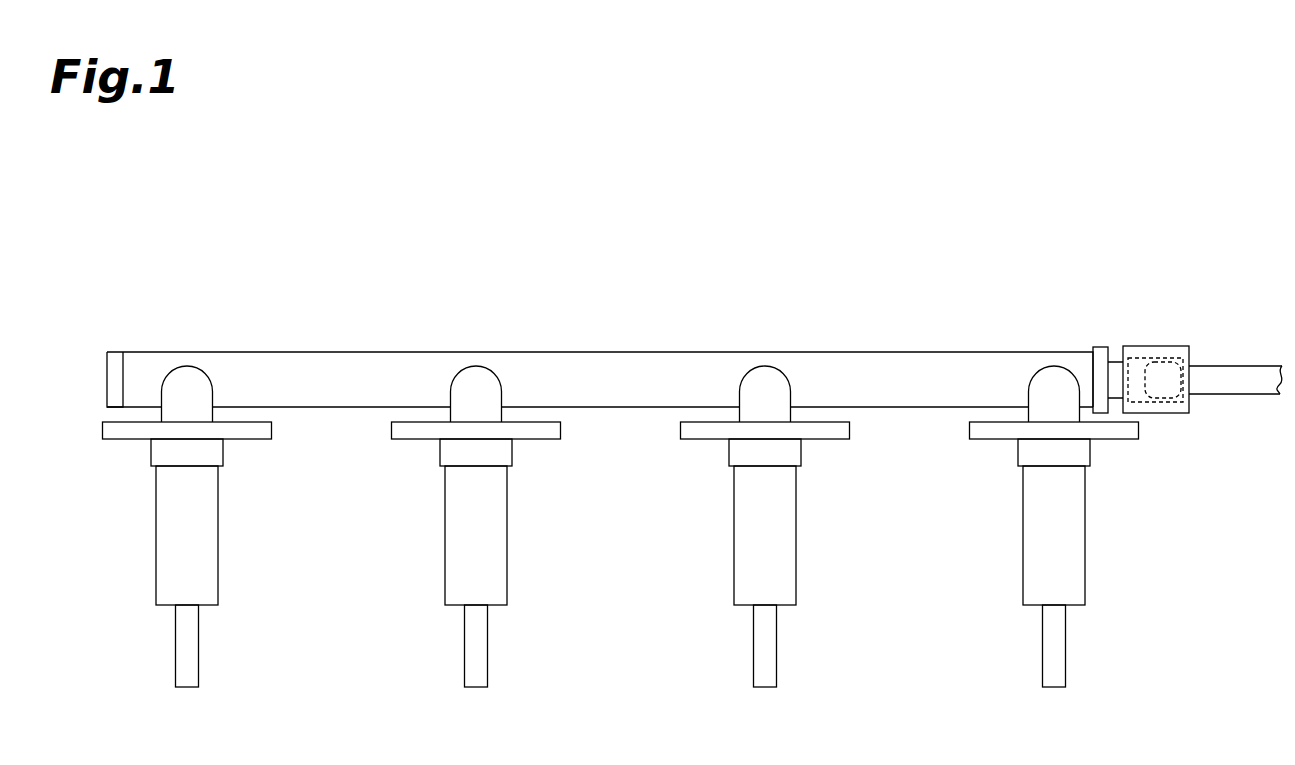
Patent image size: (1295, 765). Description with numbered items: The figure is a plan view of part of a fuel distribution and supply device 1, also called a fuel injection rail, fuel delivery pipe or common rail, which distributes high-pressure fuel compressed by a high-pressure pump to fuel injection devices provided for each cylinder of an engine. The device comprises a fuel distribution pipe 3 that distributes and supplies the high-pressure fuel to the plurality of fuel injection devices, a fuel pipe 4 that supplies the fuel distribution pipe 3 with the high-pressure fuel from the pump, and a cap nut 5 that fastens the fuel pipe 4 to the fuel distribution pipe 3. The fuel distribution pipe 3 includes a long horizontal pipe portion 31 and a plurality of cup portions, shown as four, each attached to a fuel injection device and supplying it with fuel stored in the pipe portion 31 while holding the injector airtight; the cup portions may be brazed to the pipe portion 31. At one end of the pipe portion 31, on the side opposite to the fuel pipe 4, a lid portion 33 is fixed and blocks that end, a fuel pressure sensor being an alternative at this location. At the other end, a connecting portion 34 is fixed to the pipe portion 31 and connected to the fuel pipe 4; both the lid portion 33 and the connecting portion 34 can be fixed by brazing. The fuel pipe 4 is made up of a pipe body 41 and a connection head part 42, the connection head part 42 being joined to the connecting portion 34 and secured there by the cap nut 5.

The fuel distribution and supply device 1 is at (830, 208).
The fuel distribution pipe 3 is at (639, 352).
The pipe portion 31 is at (815, 350).
The lid portion 33 is at (116, 350).
The connecting portion 34 is at (1101, 346).
The fuel pipe 4 is at (1252, 363).
The pipe body 41 is at (1220, 365).
The connection head part 42 is at (1183, 345).
The cap nut 5 is at (1140, 345).